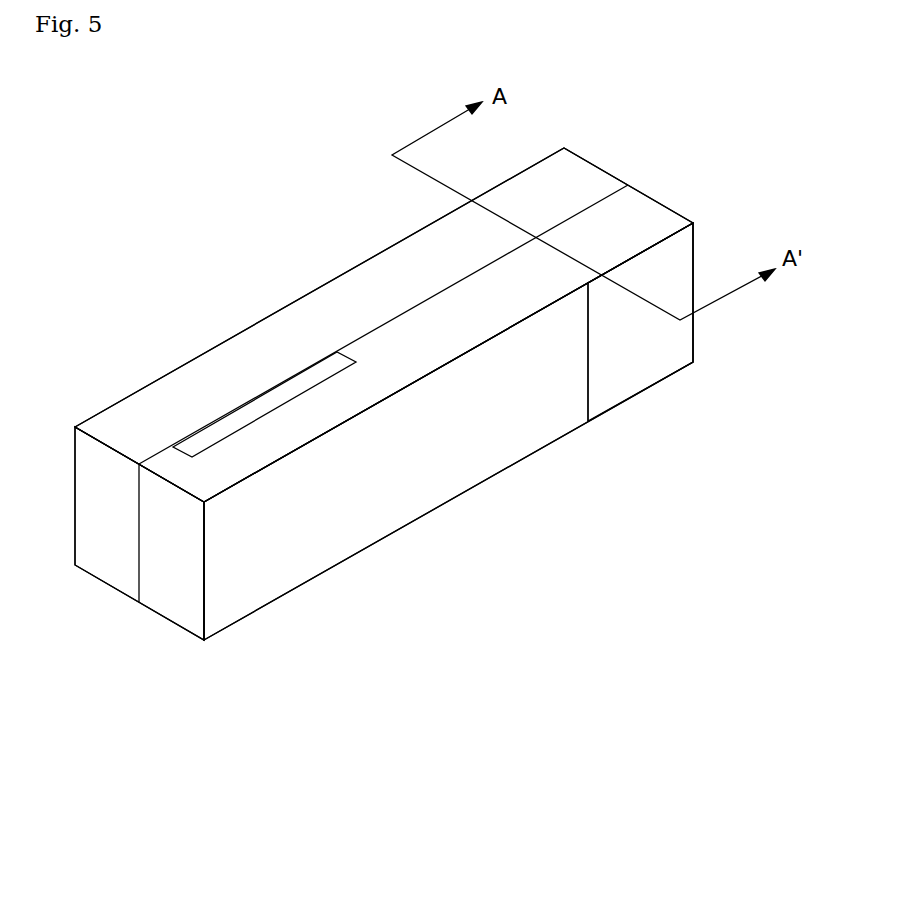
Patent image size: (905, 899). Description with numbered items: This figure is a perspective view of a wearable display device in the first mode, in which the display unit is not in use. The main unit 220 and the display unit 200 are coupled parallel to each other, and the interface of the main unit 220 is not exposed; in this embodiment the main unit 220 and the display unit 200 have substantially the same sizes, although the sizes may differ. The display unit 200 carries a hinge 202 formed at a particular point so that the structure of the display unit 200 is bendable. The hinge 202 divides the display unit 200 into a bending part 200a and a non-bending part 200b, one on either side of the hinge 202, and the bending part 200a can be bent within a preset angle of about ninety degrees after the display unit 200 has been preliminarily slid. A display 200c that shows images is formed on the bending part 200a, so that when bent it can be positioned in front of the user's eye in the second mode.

The display unit 200 is at (157, 643).
The bending part 200a is at (322, 548).
The non-bending part 200b is at (635, 380).
The display 200c is at (275, 393).
The hinge 202 is at (556, 261).
The main unit 220 is at (138, 402).